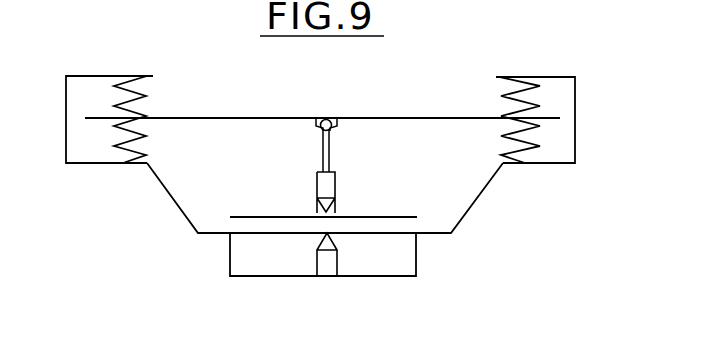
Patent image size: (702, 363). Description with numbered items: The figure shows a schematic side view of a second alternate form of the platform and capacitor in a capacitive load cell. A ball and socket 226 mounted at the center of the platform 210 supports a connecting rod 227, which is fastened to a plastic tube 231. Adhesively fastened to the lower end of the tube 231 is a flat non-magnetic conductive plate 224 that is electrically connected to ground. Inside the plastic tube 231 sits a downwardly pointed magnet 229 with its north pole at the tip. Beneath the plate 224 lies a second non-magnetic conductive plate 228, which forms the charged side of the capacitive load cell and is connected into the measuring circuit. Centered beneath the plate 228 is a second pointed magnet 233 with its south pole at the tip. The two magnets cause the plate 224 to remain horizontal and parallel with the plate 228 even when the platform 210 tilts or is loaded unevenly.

The platform 210 is at (437, 107).
The flat non-magnetic conductive plate 224 is at (376, 215).
The ball and socket 226 is at (330, 107).
The connecting rod 227 is at (321, 159).
The non-magnetic conductive plate 228 is at (258, 233).
The downwardly pointed magnet 229 is at (328, 182).
The plastic tube 231 is at (313, 195).
The second pointed magnet 233 is at (326, 268).